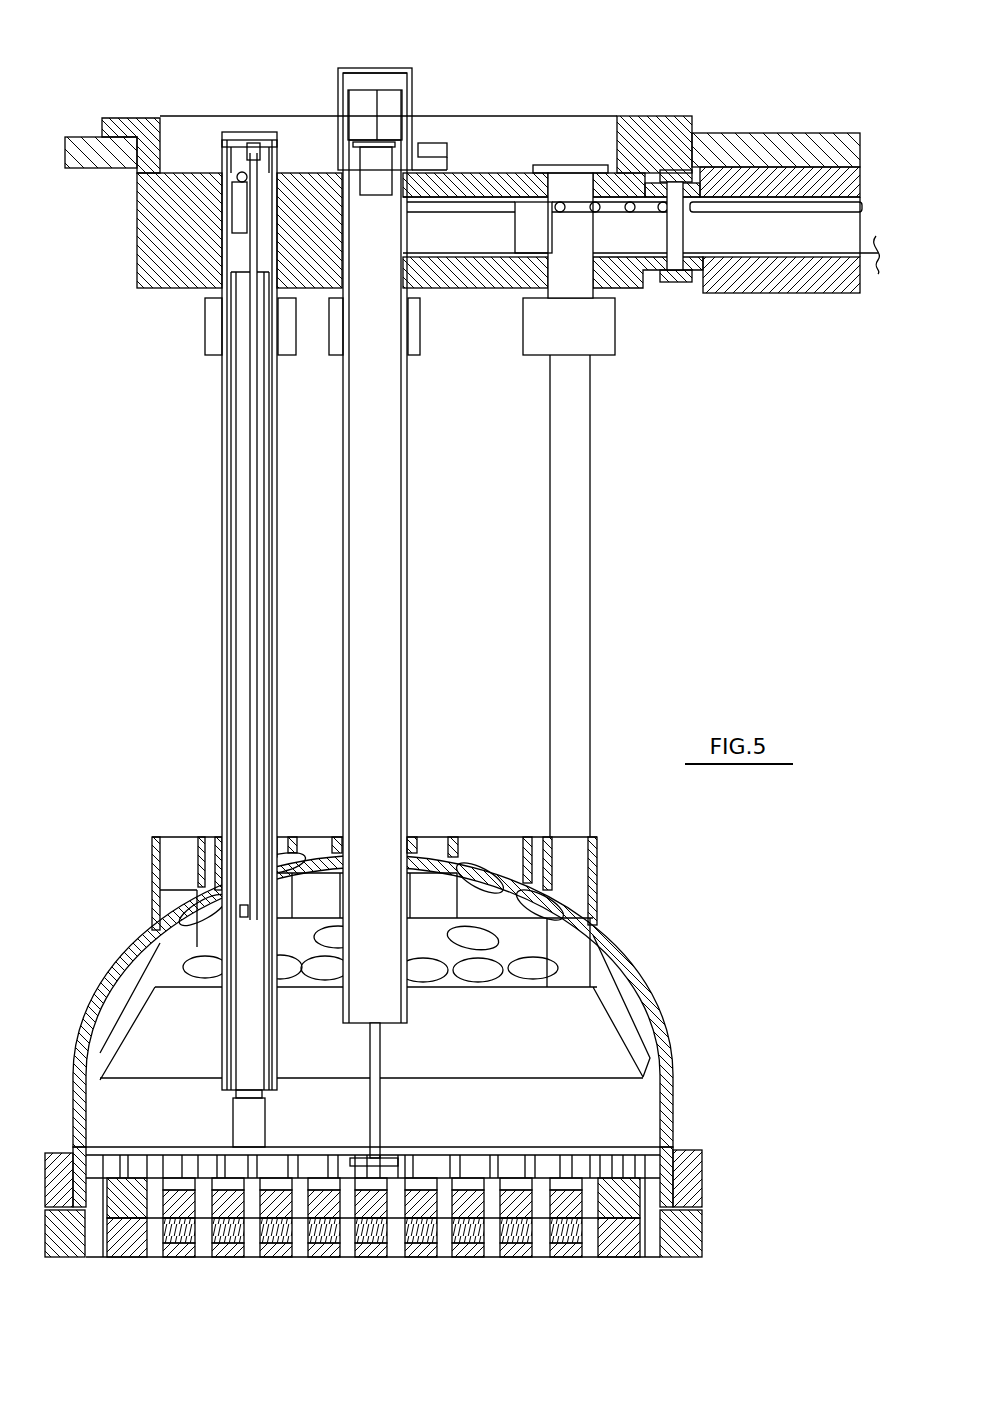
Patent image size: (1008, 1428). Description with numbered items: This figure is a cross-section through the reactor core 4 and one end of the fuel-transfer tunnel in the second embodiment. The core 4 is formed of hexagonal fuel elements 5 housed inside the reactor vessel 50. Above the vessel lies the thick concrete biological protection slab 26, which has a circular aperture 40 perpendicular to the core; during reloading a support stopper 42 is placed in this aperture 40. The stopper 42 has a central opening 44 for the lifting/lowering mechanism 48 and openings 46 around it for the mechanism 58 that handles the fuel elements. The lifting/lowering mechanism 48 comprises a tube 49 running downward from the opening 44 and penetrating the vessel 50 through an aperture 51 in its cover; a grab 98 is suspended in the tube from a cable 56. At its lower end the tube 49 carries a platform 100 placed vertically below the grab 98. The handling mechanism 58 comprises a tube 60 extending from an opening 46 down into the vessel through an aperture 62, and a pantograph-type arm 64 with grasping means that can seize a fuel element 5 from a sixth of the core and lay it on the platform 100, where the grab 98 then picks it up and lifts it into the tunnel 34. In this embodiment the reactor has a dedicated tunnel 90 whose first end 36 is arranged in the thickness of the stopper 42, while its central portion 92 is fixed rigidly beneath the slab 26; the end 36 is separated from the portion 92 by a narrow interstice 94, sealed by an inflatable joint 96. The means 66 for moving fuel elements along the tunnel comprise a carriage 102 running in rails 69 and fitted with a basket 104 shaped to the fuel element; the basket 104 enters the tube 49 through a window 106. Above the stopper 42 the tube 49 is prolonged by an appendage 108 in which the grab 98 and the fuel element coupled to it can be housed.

The reactor core 4 is at (98, 944).
The fuel element 5 is at (372, 165).
The biological protection slab 26 is at (100, 170).
The tunnel 34 is at (802, 178).
The first end of the tunnel 36 is at (466, 282).
The circular aperture 40 is at (141, 148).
The support stopper 42 is at (170, 258).
The central opening 44 is at (350, 235).
The opening 46 is at (230, 248).
The lifting/lowering mechanism 48 is at (437, 76).
The tube 49 is at (403, 603).
The reactor vessel 50 is at (702, 1030).
The aperture 51 is at (402, 848).
The cable 56 is at (376, 138).
The mechanism for handling the fuel elements 58 is at (248, 118).
The tube 60 is at (220, 525).
The aperture 62 is at (270, 862).
The pantograph-type arm 64 is at (245, 1002).
The means for transferring the fuel elements along the tunnel 66 is at (692, 243).
The rails 69 is at (812, 212).
The tunnel 90 is at (787, 315).
The central portion of the tunnel 92 is at (812, 278).
The interstice 94 is at (668, 285).
The inflatable joint 96 is at (680, 282).
The grab 98 is at (372, 150).
The platform 100 is at (390, 1162).
The carriage 102 is at (552, 232).
The basket 104 is at (528, 223).
The window 106 is at (398, 232).
The appendage 108 is at (412, 102).